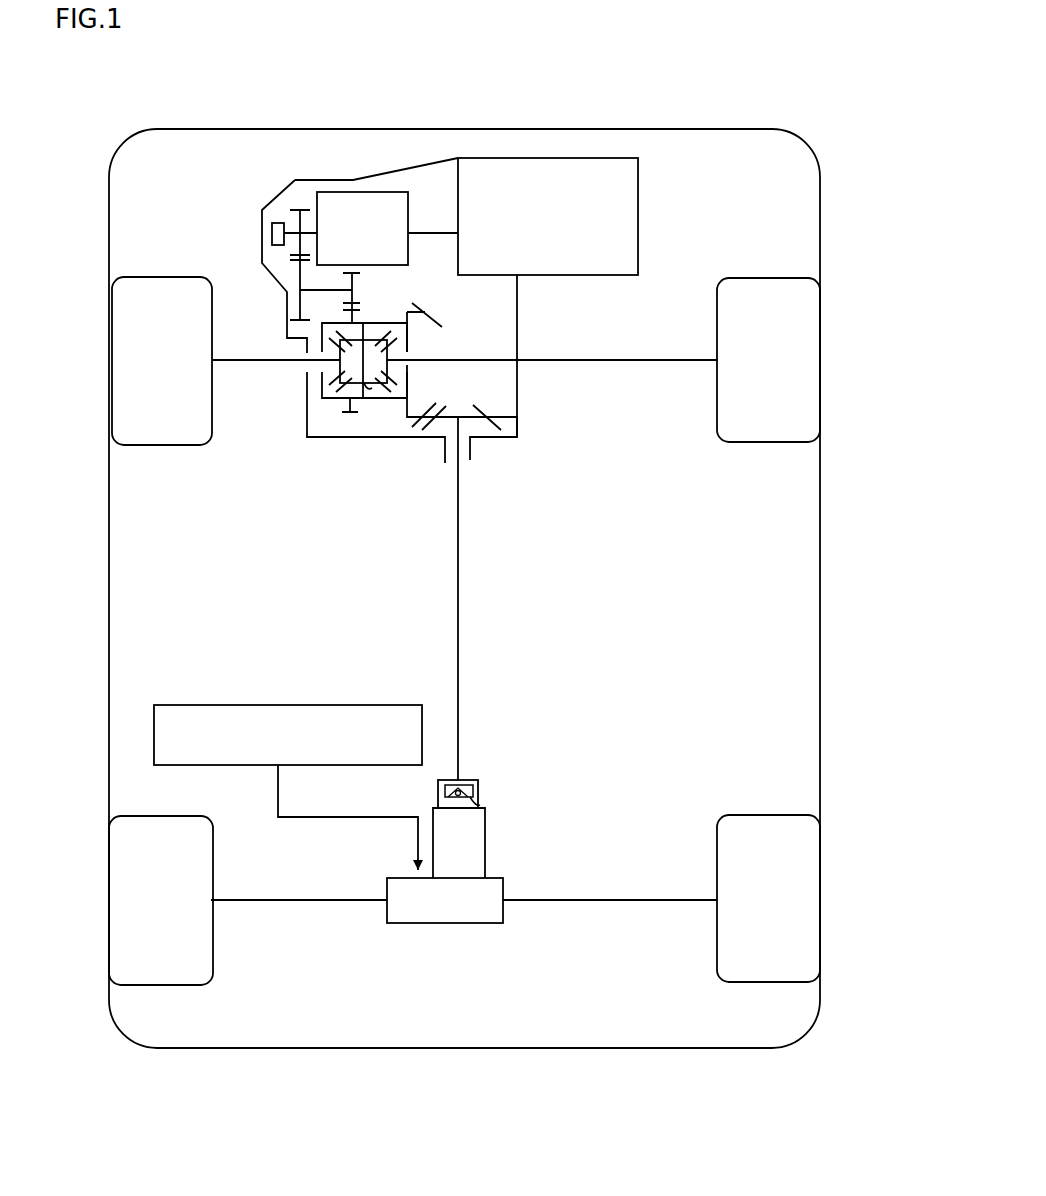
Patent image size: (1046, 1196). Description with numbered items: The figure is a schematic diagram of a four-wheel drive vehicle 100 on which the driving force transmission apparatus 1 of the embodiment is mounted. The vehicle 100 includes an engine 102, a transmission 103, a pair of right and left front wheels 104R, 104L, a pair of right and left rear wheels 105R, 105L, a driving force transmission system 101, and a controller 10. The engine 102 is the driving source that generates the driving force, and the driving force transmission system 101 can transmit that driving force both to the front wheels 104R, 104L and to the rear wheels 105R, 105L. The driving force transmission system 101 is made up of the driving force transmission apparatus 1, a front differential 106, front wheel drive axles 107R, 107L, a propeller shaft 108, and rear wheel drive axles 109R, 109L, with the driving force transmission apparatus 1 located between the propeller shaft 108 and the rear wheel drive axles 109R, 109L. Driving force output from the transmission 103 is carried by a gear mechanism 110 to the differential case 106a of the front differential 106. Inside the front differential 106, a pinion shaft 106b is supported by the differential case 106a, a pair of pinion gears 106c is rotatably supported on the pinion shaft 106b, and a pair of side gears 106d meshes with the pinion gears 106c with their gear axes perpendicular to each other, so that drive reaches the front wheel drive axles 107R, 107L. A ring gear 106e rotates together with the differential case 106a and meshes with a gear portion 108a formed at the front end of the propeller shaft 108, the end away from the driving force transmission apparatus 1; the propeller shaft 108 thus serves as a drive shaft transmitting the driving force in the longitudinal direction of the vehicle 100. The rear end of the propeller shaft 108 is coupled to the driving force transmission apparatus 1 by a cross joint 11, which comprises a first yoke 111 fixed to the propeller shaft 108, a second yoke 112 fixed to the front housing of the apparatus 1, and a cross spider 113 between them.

The four-wheel drive vehicle 100 is at (745, 95).
The driving force transmission system 101 is at (533, 343).
The engine 102 is at (582, 158).
The transmission 103 is at (352, 190).
The left front wheel 104L is at (110, 334).
The right front wheel 104R is at (820, 334).
The left rear wheel 105L is at (109, 918).
The right rear wheel 105R is at (820, 916).
The front differential 106 is at (378, 373).
The differential case 106a is at (333, 400).
The pinion shaft 106b is at (370, 392).
The pinion gears 106c is at (368, 338).
The side gears 106d is at (392, 351).
The ring gear 106e is at (414, 304).
The left front wheel drive axle 107L is at (234, 357).
The right front wheel drive axle 107R is at (622, 357).
The propeller shaft 108 is at (460, 641).
The gear portion 108a is at (498, 418).
The left rear wheel drive axle 109L is at (338, 902).
The right rear wheel drive axle 109R is at (652, 901).
The gear mechanism 110 is at (287, 271).
The controller 10 is at (226, 706).
The driving force transmission apparatus 1 is at (463, 924).
The cross joint 11 is at (512, 791).
The first yoke 111 is at (478, 781).
The second yoke 112 is at (480, 807).
The cross spider 113 is at (478, 793).